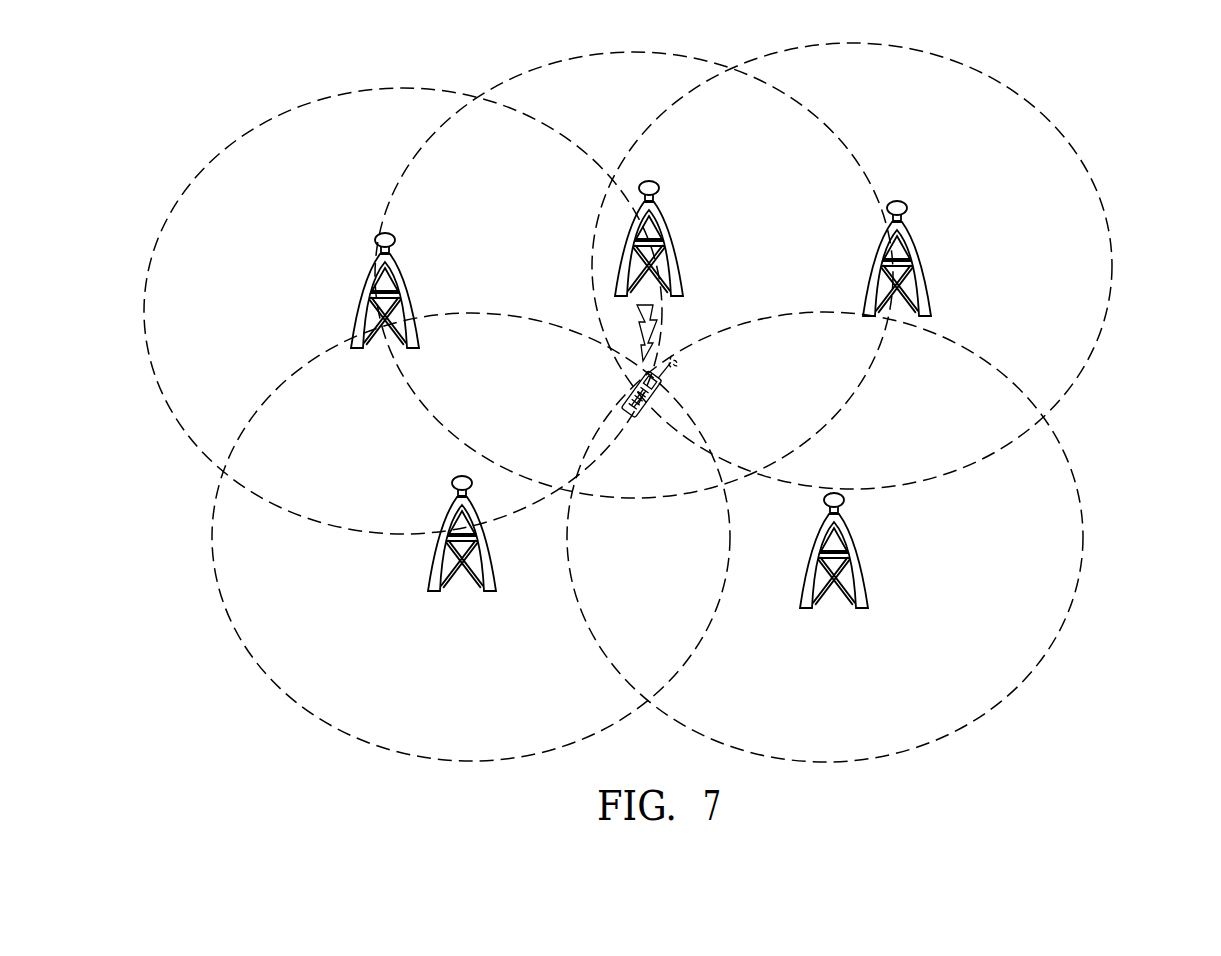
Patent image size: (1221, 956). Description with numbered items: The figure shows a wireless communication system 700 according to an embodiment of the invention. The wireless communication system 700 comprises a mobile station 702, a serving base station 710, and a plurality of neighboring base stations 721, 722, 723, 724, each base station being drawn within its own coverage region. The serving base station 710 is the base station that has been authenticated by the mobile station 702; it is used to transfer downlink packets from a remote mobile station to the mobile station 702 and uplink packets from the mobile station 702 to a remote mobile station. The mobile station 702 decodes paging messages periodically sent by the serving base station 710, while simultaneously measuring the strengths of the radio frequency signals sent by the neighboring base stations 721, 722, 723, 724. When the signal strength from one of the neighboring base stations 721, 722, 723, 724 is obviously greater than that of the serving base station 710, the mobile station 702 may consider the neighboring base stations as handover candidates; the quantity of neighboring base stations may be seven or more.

The wireless communication system 700 is at (1151, 129).
The mobile station 702 is at (655, 387).
The serving base station 710 is at (684, 289).
The neighboring base station 721 is at (408, 287).
The neighboring base station 722 is at (428, 575).
The neighboring base station 723 is at (868, 598).
The neighboring base station 724 is at (932, 304).